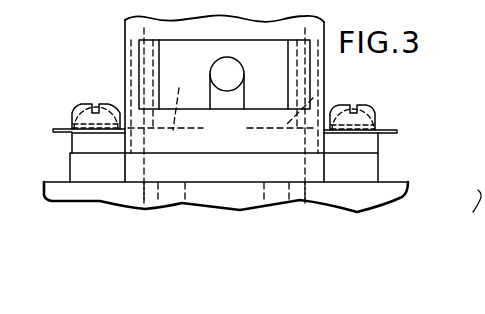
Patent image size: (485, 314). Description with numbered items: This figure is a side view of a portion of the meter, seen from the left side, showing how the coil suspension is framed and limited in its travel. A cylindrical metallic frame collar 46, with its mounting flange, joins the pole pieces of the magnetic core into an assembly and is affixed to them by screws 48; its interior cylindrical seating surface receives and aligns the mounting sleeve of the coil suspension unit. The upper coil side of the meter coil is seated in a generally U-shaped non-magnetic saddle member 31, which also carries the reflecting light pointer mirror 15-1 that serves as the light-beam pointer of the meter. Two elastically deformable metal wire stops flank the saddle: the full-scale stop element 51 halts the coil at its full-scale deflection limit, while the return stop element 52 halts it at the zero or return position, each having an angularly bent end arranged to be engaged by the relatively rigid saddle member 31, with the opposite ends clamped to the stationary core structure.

The frame collar 46 is at (138, 21).
The screw 48 is at (95, 103).
The full-scale stop element 51 is at (318, 96).
The return stop element 52 is at (176, 99).
The light pointer mirror 15-1 is at (240, 70).
The upper saddle member 31 is at (243, 92).